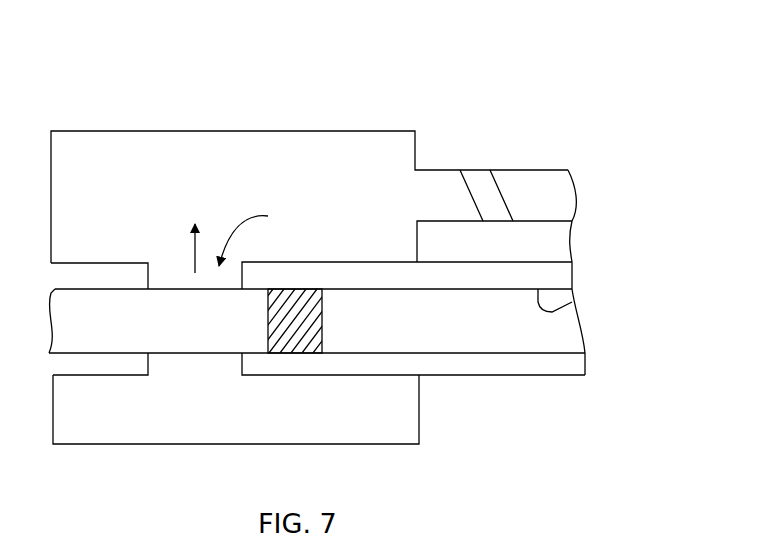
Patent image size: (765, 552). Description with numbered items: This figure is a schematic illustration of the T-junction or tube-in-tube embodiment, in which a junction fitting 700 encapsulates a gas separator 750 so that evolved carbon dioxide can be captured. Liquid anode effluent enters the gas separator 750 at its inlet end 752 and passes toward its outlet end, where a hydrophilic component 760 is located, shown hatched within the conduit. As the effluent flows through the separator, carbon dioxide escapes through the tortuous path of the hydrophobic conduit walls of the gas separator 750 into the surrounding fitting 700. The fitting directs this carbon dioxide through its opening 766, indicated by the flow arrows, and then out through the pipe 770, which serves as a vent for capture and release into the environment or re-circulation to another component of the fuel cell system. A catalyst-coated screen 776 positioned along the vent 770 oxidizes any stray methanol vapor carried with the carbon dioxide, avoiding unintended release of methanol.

The T-junction fitting 700 is at (233, 71).
The gas separator 750 is at (575, 305).
The inlet end 752 is at (163, 294).
The hydrophilic component 760 is at (322, 312).
The opening 766 is at (263, 234).
The pipe 770 is at (428, 221).
The coated screen 776 is at (482, 178).